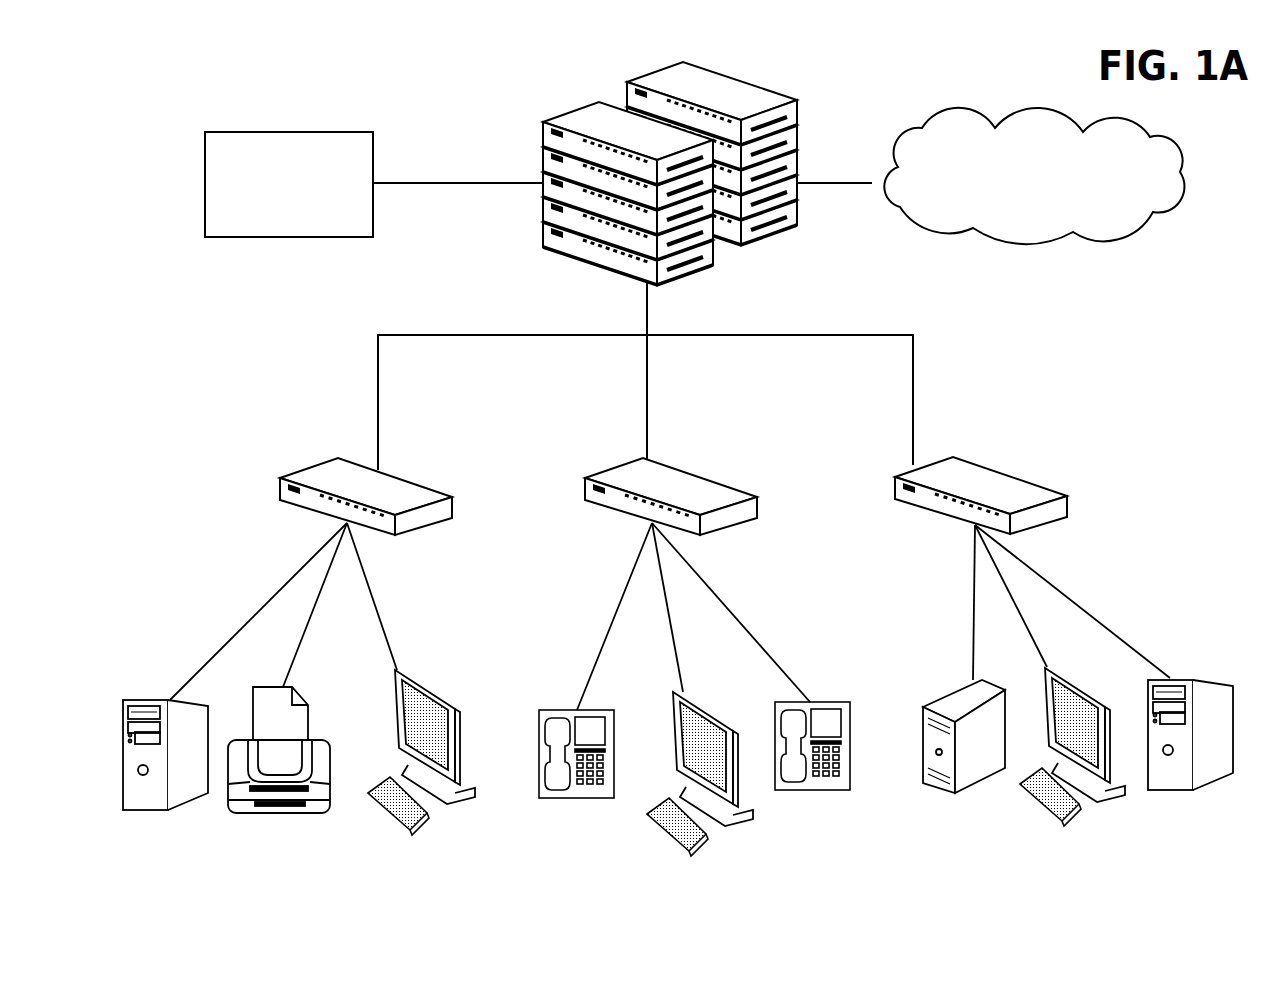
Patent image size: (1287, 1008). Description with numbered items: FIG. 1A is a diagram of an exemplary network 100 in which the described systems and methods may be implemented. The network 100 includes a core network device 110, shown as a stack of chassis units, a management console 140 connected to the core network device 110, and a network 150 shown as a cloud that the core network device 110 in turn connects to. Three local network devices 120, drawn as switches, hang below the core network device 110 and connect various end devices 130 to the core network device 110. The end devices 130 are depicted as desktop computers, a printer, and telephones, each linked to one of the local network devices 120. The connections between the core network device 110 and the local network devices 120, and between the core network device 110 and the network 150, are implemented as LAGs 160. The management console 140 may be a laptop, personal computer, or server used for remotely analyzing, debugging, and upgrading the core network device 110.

The network 100 is at (214, 92).
The core network device 110 is at (543, 122).
The local network device 120 is at (1042, 446).
The end device 130 is at (1200, 822).
The management console 140 is at (307, 221).
The network 150 is at (1055, 201).
The LAG 160 is at (828, 183).